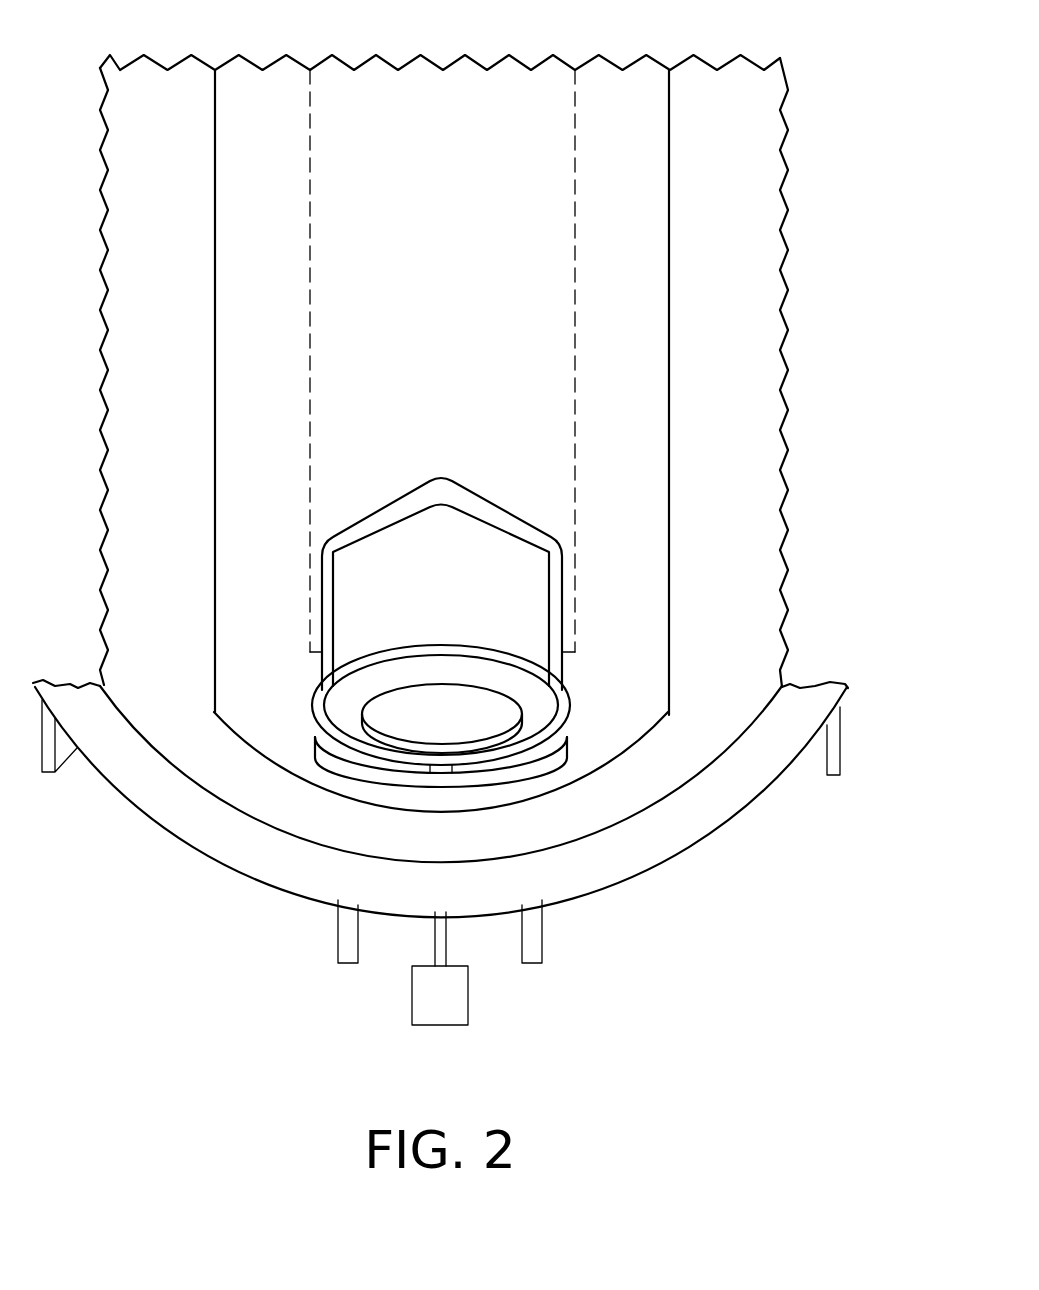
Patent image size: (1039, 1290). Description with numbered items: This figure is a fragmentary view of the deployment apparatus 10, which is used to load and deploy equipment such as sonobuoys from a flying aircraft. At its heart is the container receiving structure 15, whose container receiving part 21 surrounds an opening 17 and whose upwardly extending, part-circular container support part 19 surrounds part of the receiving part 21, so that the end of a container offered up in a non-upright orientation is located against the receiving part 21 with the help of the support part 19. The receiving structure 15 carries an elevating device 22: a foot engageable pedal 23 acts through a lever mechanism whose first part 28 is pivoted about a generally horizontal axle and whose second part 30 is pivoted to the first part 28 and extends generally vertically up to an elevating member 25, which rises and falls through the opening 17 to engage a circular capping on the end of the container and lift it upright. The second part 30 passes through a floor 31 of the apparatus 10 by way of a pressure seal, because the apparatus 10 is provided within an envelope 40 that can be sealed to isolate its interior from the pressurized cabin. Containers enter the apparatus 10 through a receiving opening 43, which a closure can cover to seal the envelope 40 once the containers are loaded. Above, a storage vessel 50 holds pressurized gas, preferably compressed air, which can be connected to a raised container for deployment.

The deployment apparatus 10 is at (793, 372).
The container receiving structure 15 is at (293, 714).
The opening 17 is at (542, 712).
The container support part 19 is at (426, 594).
The container receiving part 21 is at (360, 762).
The elevating device 22 is at (487, 1000).
The foot engageable pedal 23 is at (438, 1018).
The elevating member 25 is at (424, 737).
The first part 28 is at (433, 940).
The second part 30 is at (441, 773).
The floor 31 is at (573, 772).
The envelope 40 is at (742, 518).
The receiving opening 43 is at (215, 283).
The storage vessel 50 is at (430, 90).